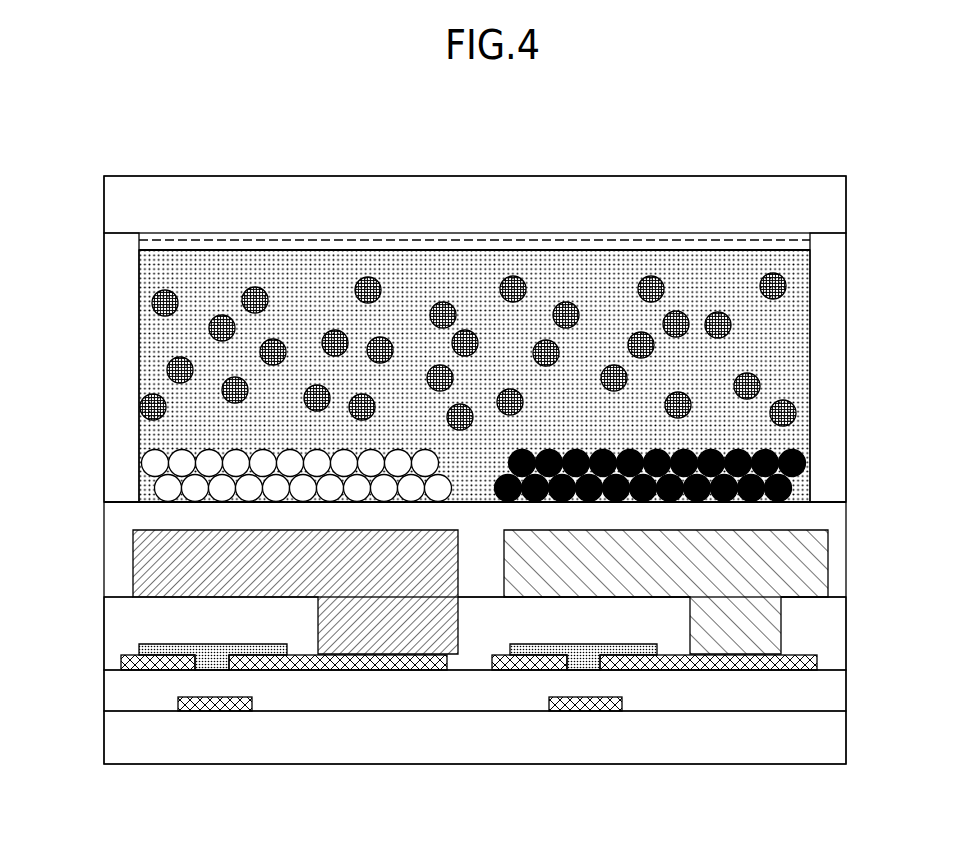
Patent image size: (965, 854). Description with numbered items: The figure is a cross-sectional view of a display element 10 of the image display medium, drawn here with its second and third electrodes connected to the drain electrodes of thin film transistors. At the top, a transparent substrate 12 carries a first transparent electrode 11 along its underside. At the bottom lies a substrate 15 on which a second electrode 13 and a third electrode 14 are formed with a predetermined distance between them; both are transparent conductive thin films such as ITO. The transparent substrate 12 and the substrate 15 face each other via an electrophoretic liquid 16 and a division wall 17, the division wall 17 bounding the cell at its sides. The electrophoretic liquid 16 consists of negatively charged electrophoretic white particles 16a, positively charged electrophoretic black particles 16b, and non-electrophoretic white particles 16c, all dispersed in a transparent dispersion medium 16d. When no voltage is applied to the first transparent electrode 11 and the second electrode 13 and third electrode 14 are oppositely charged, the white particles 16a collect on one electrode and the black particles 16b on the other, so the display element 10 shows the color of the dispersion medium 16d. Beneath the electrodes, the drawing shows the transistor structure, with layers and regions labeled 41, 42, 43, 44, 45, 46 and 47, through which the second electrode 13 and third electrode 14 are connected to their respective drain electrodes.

The display element 10 is at (768, 94).
The first transparent electrode 11 is at (765, 233).
The transparent substrate 12 is at (846, 200).
The second electrode 13 is at (133, 578).
The third electrode 14 is at (828, 578).
The substrate 15 is at (846, 735).
The electrophoretic liquid 16 is at (824, 322).
The negatively charged electrophoretic white particles 16a is at (148, 460).
The positively charged electrophoretic black particles 16b is at (806, 460).
The non-electrophoretic white particles 16c is at (765, 387).
The transparent dispersion medium 16d is at (796, 278).
The division wall 17 is at (846, 405).
The gate electrode 41 is at (585, 712).
The gate insulating layer 42 is at (846, 688).
The source/drain electrode 43 is at (121, 658).
The semiconductor layer 44 is at (350, 671).
The semiconductor layer 45 is at (575, 665).
The interlayer insulating layer 46 is at (846, 625).
The insulating layer 47 is at (846, 540).